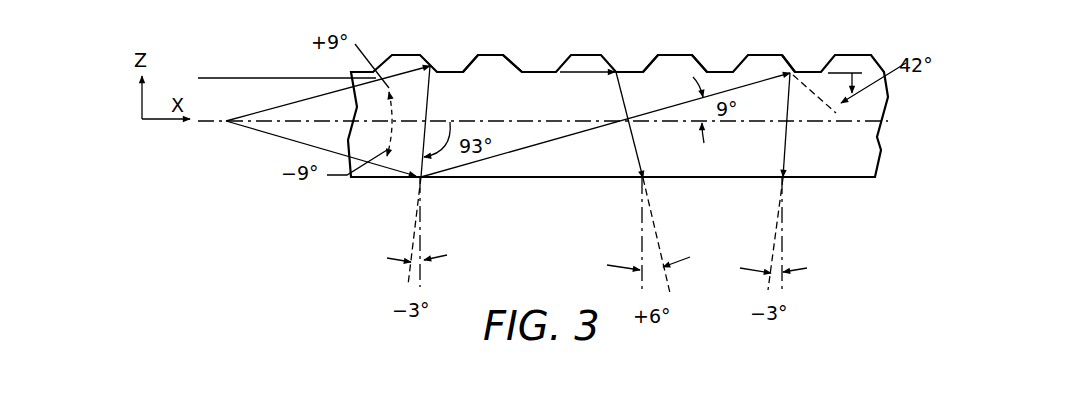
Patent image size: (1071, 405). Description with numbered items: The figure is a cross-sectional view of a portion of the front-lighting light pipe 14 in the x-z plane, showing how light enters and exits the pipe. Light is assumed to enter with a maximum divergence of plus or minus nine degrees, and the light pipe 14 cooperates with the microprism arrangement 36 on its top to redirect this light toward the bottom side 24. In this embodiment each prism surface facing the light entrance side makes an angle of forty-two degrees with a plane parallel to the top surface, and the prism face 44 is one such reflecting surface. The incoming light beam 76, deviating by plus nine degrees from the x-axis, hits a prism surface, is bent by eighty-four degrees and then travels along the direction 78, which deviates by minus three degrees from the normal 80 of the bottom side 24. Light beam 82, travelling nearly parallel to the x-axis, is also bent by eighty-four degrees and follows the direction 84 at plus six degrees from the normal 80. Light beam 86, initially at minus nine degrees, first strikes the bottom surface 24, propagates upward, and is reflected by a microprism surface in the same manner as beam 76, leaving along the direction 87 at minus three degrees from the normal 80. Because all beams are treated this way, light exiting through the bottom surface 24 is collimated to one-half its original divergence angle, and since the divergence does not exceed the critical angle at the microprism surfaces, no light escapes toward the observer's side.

The front-lighting light pipe 14 is at (831, 158).
The bottom side 24 is at (590, 160).
The microprism arrangement 36 is at (626, 52).
The prism facet 44 is at (793, 73).
The incoming light beam 76 is at (287, 103).
The propagation direction 78 is at (412, 235).
The normal 80 is at (421, 237).
The light beam 82 is at (493, 58).
The propagation direction 84 is at (657, 233).
The light beam 86 is at (263, 133).
The exiting ray 87 is at (773, 233).